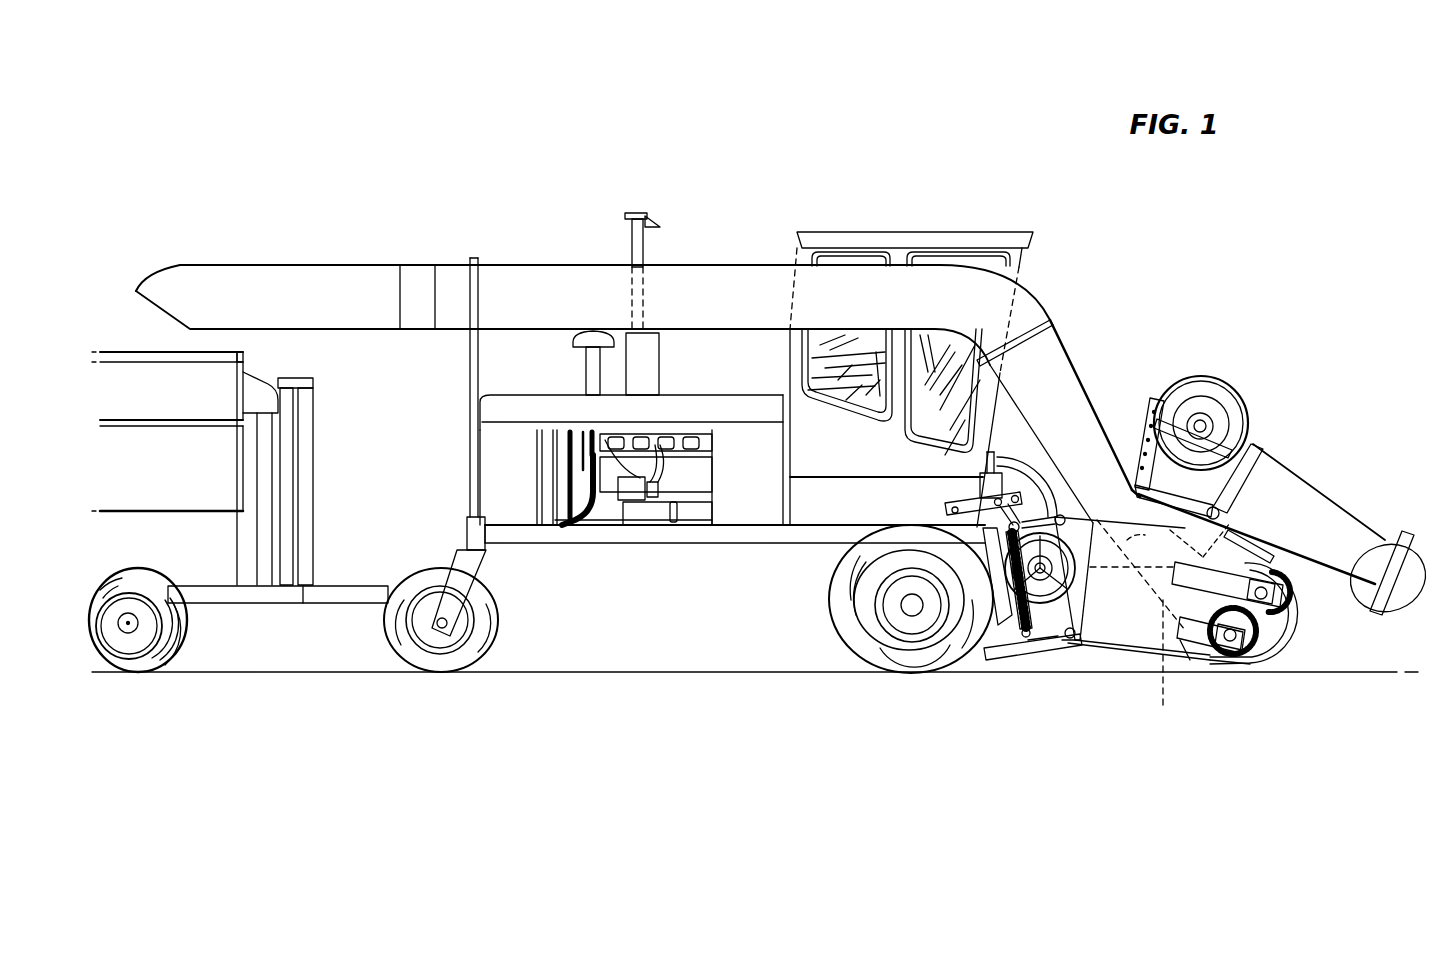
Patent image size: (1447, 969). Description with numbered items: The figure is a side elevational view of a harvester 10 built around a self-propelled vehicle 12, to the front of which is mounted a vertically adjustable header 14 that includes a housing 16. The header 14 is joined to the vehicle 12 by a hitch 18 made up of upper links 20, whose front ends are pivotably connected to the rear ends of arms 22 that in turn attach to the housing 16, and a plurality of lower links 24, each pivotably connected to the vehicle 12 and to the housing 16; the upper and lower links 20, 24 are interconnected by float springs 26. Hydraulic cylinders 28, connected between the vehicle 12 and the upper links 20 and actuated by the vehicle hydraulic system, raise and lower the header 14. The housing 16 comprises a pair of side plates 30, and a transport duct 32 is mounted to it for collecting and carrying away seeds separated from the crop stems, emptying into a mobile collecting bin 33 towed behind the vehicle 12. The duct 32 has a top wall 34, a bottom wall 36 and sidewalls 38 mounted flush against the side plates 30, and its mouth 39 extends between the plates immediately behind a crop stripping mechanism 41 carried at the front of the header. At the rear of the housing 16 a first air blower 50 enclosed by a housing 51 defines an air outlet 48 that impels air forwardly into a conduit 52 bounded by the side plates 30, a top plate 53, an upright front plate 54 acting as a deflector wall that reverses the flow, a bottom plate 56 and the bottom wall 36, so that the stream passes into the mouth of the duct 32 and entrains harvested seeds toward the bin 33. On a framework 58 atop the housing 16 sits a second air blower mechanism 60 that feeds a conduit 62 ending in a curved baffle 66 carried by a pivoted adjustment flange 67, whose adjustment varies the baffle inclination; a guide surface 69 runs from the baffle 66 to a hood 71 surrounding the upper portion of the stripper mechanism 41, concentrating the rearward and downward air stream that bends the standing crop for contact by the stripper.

The harvester 10 is at (778, 204).
The self-propelled vehicle 12 is at (715, 393).
The header 14 is at (1262, 685).
The housing 16 is at (1142, 665).
The hitch 18 is at (980, 670).
The upper links 20 is at (960, 505).
The arms 22 is at (1058, 515).
The lower links 24 is at (1033, 645).
The float springs 26 is at (1012, 652).
The hydraulic cylinders 28 is at (985, 562).
The side plates 30 is at (1142, 632).
The transport duct 32 is at (1067, 378).
The mobile collecting bin 33 is at (218, 576).
The top wall 34 is at (1058, 335).
The bottom wall 36 is at (1142, 612).
The sidewalls 38 is at (1072, 395).
The mouth 39 is at (1262, 545).
The crop stripping mechanism 41 is at (1292, 620).
The air outlet 48 is at (1092, 567).
The first air blower 50 is at (1050, 625).
The housing 51 is at (1053, 642).
The conduit 52 is at (1170, 650).
The top plate 53 is at (1146, 538).
The front plate 54 is at (1212, 660).
The bottom plate 56 is at (1186, 660).
The framework 58 is at (1154, 398).
The second air blower mechanism 60 is at (1224, 368).
The conduit 62 is at (1343, 527).
The curved baffle 66 is at (1398, 613).
The pivoted adjustment flange 67 is at (1423, 553).
The guide surface 69 is at (1347, 593).
The hood 71 is at (1285, 588).